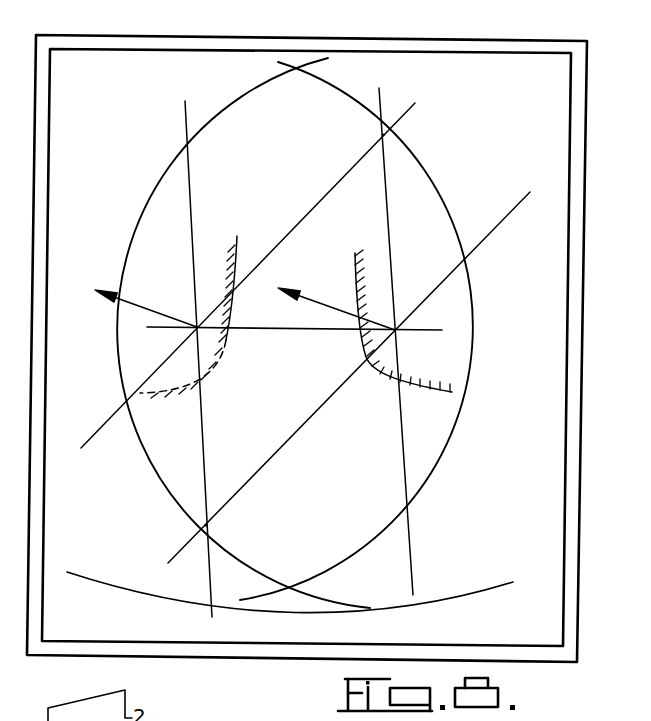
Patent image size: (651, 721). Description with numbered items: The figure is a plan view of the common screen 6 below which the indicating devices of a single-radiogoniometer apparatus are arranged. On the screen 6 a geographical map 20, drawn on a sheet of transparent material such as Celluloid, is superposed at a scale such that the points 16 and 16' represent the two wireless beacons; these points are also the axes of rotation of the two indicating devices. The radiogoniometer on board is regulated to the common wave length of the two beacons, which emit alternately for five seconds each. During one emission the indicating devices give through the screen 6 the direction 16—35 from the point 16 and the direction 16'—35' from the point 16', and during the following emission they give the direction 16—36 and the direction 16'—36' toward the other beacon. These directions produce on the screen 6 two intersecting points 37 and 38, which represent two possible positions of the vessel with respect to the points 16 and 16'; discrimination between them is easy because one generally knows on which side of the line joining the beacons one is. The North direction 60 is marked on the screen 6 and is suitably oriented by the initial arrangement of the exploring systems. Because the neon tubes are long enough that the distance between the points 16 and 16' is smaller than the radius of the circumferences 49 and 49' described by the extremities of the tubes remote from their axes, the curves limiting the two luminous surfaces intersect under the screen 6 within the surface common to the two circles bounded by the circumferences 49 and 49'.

The screen 6 is at (575, 338).
The geographical map 20 is at (553, 318).
The point 16 is at (291, 317).
The point 16' is at (403, 321).
The direction 35 is at (215, 359).
The direction 35' is at (416, 341).
The direction 36 is at (248, 285).
The direction 36' is at (347, 389).
The intersecting point 37 is at (209, 527).
The intersecting point 38 is at (383, 136).
The circumference 49 is at (181, 584).
The circumference 49' is at (404, 584).
The North direction 60 is at (144, 307).